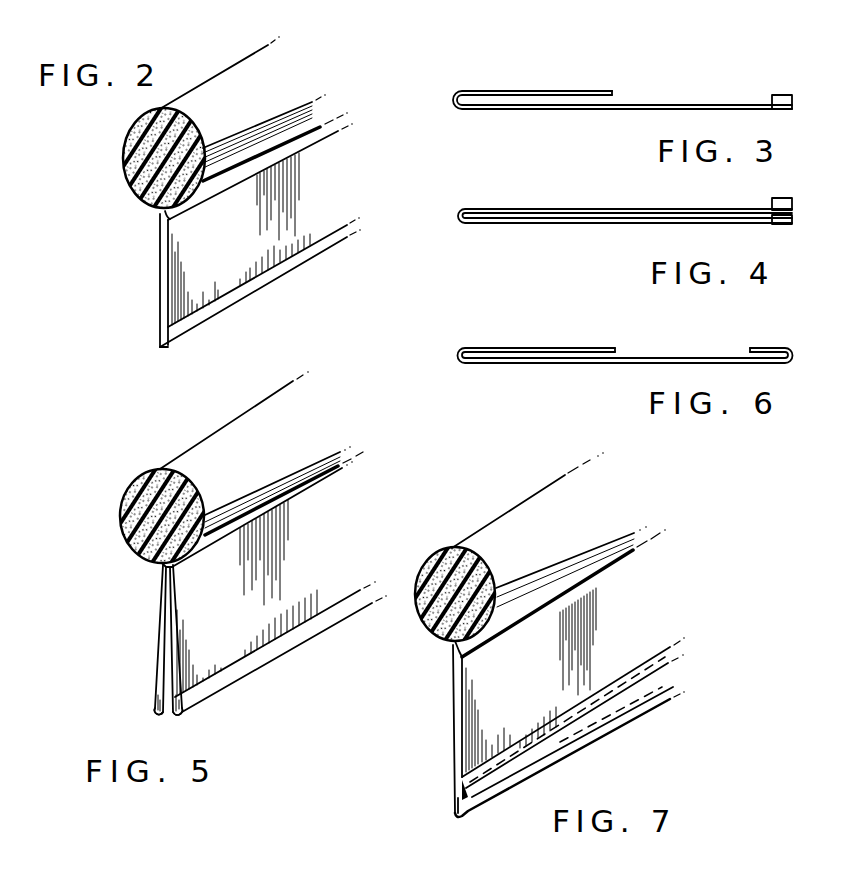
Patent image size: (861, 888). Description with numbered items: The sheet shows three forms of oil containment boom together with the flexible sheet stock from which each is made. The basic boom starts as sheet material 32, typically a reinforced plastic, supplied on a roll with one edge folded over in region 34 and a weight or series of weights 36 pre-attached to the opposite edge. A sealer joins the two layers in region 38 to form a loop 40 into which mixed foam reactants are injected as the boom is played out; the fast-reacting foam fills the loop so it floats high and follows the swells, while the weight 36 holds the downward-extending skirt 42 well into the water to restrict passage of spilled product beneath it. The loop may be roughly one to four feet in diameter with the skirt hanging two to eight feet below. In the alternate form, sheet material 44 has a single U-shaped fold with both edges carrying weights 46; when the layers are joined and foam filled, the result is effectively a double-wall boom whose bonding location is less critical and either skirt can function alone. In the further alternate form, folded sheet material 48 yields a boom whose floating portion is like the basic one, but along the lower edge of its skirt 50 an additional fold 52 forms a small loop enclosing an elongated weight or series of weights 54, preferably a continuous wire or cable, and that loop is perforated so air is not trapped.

In FIG. 3, the sheet material 32 is at (597, 108).
In FIG. 3, the folded-over region 34 is at (639, 83).
In FIG. 2, the weight 36 is at (242, 297).
In FIG. 3, the weight 36 is at (783, 95).
In FIG. 2, the joining region 38 is at (178, 206).
In FIG. 3, the joining region 38 is at (599, 88).
In FIG. 2, the loop 40 is at (125, 134).
In FIG. 2, the skirt 42 is at (160, 261).
In FIG. 3, the skirt 42 is at (674, 110).
In FIG. 4, the sheet material 44 is at (529, 207).
In FIG. 5, the sheet material 44 is at (110, 509).
In FIG. 4, the weights 46 is at (791, 222).
In FIG. 5, the weights 46 is at (158, 714).
In FIG. 6, the sheet material 48 is at (593, 367).
In FIG. 7, the skirt 50 is at (453, 714).
In FIG. 7, the fold 52 is at (582, 733).
In FIG. 7, the weight 54 is at (455, 806).